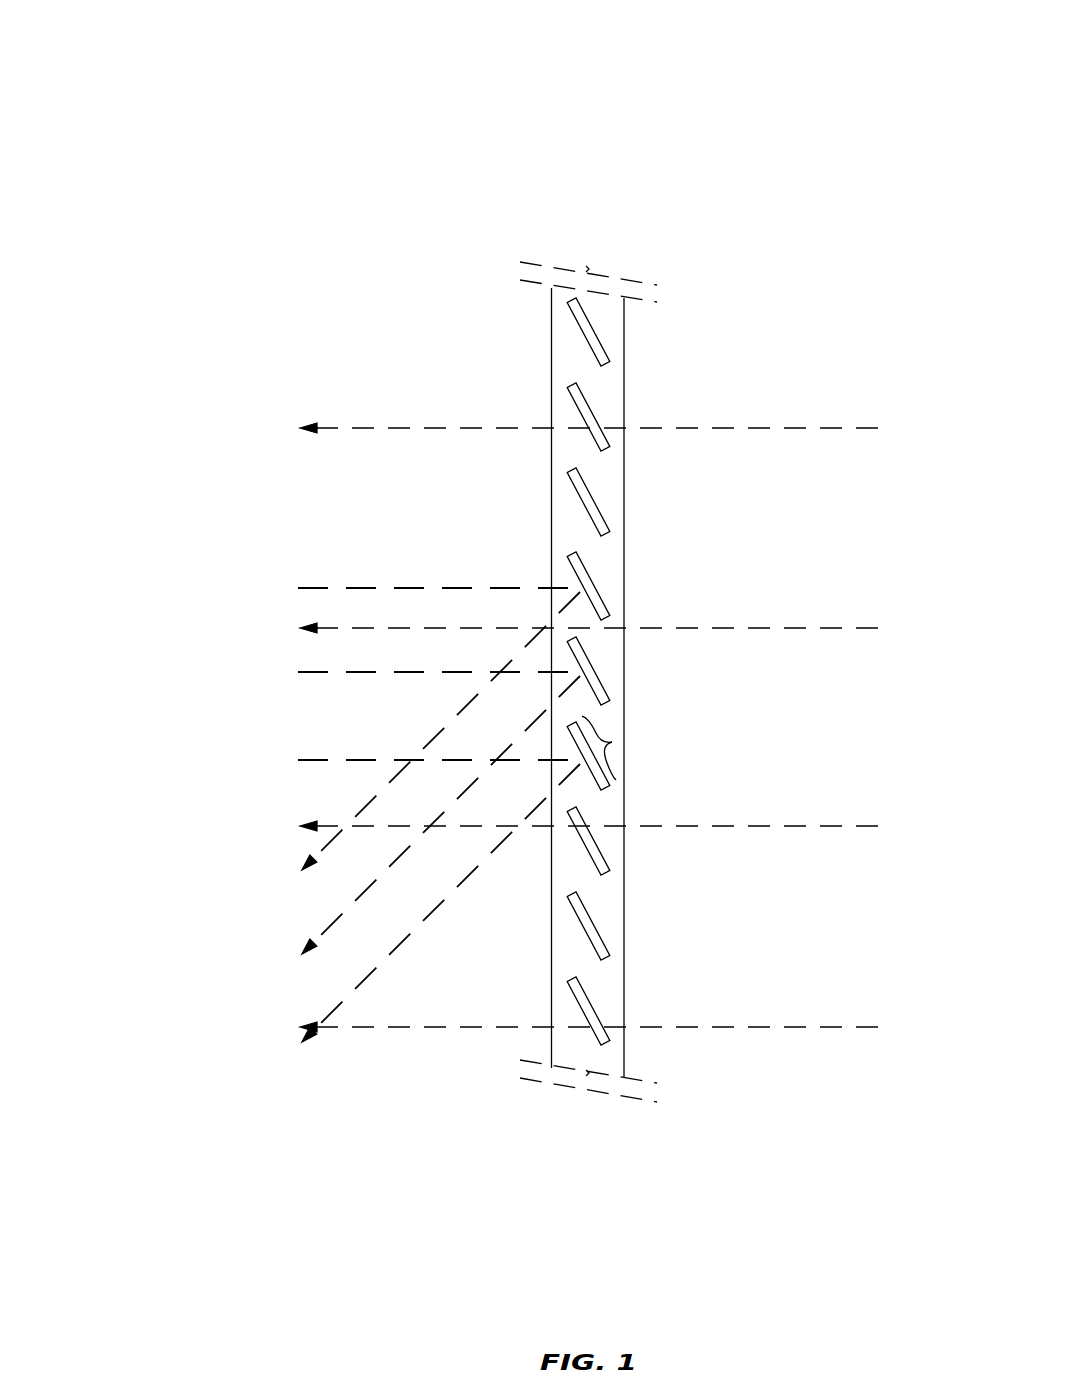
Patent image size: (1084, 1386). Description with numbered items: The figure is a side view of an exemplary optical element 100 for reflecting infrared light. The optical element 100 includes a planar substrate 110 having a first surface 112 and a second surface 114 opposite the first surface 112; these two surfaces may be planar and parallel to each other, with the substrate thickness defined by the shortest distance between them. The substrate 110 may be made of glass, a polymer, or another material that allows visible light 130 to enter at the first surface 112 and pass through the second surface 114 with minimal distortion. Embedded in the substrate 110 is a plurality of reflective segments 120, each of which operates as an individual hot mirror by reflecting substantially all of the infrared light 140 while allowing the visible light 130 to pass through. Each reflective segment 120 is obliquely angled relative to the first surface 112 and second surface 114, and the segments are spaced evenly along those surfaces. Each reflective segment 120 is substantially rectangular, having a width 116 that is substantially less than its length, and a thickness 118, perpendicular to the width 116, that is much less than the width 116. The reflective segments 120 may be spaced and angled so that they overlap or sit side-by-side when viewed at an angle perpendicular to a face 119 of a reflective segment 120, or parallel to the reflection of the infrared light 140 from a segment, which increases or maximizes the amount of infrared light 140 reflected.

The optical element 100 is at (190, 128).
The planar substrate 110 is at (625, 373).
The first surface 112 is at (643, 590).
The second surface 114 is at (535, 574).
The width 116 is at (612, 742).
The thickness 118 is at (623, 795).
The face 119 is at (561, 936).
The reflective segment 120 is at (583, 405).
The visible light 130 is at (715, 427).
The infrared light 140 is at (407, 586).